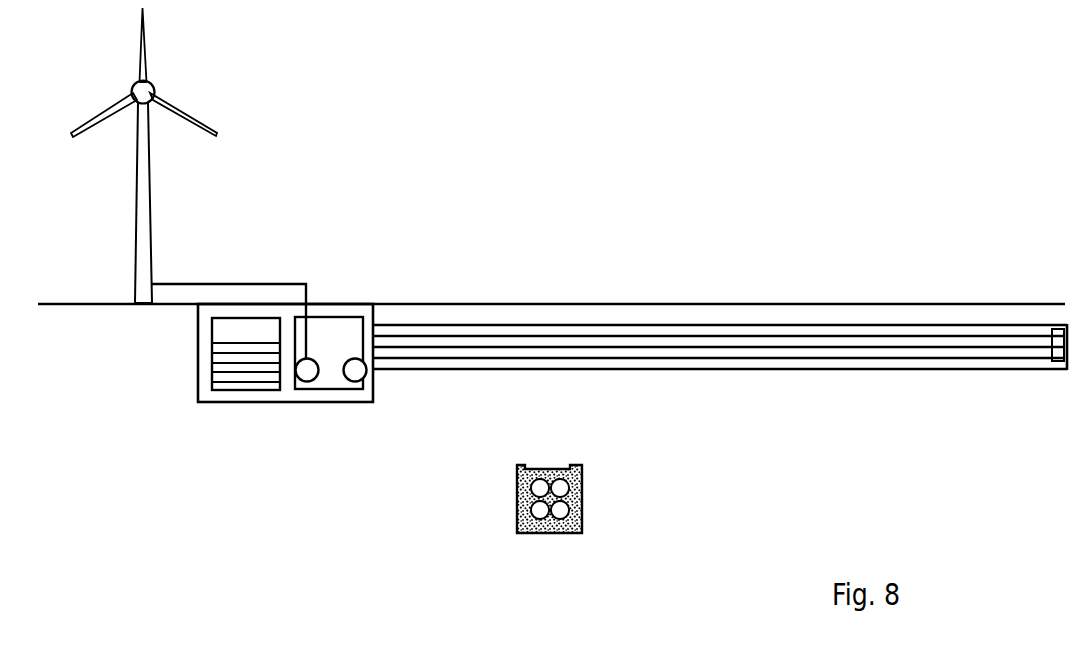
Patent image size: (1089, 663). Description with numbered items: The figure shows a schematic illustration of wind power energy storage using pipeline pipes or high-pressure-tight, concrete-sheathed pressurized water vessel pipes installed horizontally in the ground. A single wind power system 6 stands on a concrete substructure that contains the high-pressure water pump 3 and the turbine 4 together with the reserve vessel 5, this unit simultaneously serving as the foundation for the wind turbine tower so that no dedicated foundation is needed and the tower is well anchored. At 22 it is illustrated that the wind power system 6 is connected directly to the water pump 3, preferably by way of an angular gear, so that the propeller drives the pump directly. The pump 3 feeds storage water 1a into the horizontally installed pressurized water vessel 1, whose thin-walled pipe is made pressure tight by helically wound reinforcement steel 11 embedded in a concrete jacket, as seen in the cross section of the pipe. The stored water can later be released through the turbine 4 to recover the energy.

The pressurized water vessel 1 is at (540, 336).
The storage water 1a is at (228, 373).
The high-pressure water pump 3 is at (307, 373).
The turbine 4 is at (355, 373).
The reserve vessel 5 is at (233, 396).
The wind power system 6 is at (144, 197).
The reinforcement steel 11 is at (582, 530).
The direct connection of wind power system to water pump 22 is at (276, 288).